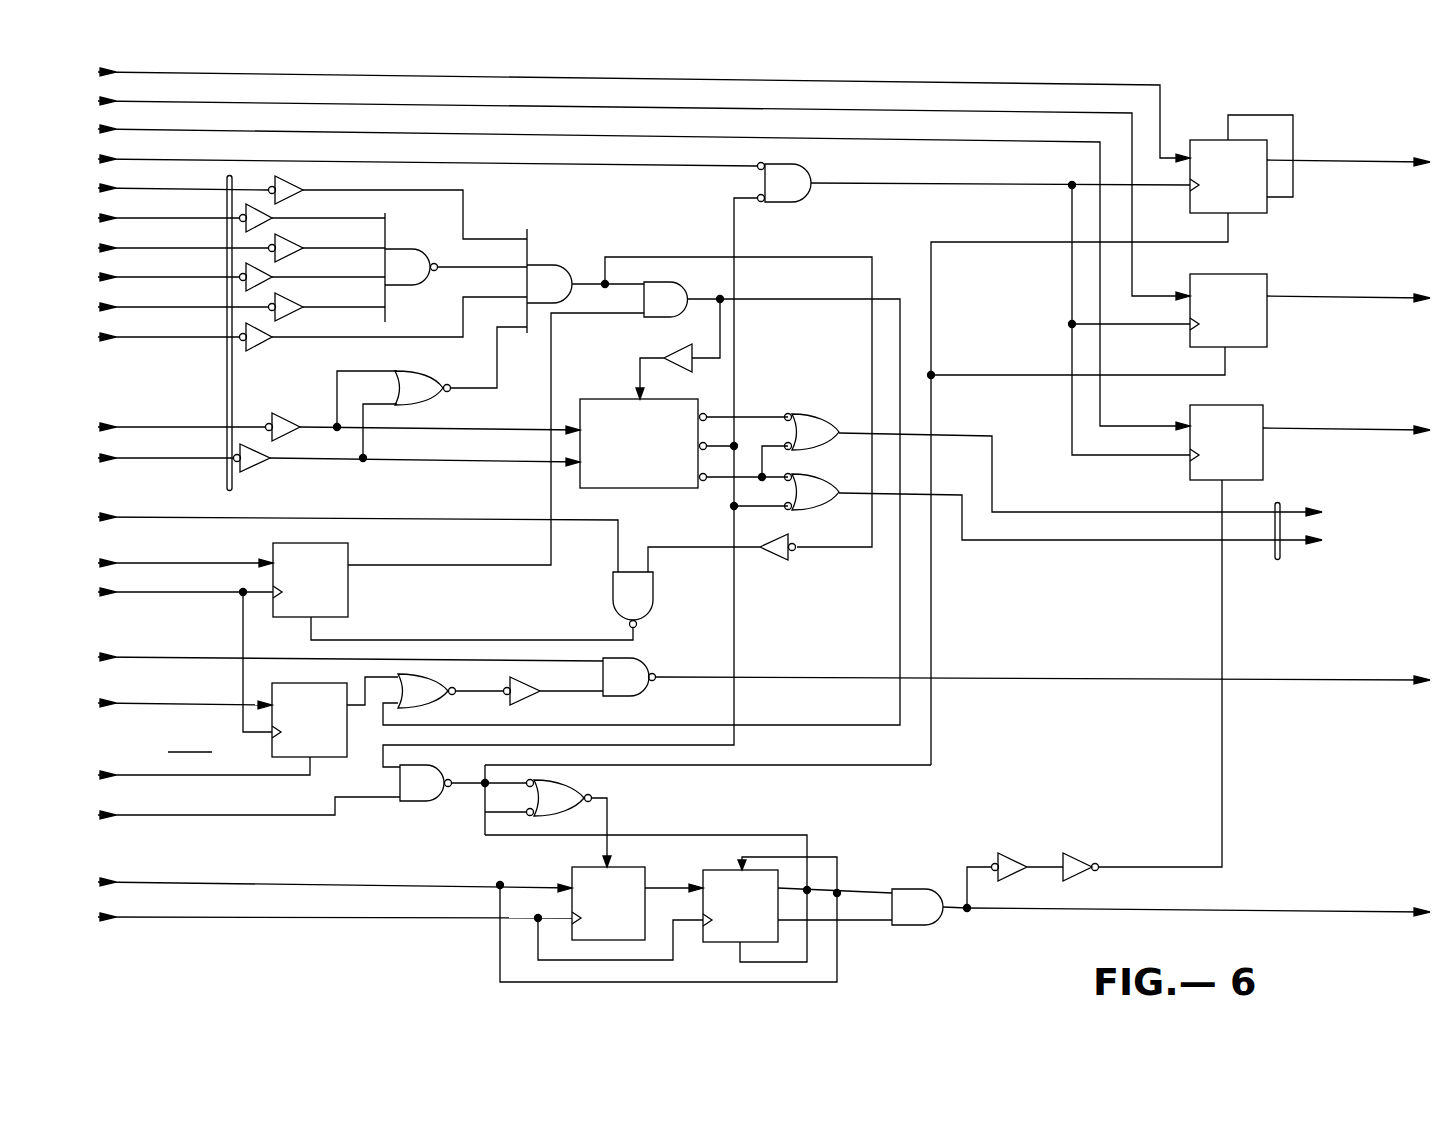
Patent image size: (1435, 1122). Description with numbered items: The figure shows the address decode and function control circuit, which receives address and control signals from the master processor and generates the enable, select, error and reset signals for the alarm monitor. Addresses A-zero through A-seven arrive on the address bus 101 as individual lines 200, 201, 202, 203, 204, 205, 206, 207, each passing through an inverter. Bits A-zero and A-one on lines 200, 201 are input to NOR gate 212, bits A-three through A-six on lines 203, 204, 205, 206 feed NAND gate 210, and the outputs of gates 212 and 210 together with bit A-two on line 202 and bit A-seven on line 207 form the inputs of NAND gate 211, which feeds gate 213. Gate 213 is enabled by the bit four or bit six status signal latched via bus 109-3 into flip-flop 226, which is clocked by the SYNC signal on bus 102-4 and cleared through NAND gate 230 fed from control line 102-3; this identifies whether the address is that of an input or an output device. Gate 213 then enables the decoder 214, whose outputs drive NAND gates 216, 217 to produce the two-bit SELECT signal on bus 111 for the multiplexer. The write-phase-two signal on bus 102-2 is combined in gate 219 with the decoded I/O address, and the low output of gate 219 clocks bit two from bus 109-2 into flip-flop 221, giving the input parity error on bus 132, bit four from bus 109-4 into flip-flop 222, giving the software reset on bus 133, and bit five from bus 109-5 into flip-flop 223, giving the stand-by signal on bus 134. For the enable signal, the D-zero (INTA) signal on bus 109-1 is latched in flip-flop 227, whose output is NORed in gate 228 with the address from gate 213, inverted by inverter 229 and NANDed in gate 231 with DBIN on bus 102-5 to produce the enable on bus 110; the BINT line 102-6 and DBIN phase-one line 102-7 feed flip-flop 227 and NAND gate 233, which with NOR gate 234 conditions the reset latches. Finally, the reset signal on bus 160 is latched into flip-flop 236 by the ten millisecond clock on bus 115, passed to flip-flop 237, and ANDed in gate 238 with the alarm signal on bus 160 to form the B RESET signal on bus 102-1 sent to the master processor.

The address bus 101 is at (232, 486).
The bit 2 bus 109-2 is at (992, 82).
The bit 4 bus 109-4 is at (858, 108).
The bit 5 bus 109-5 is at (814, 136).
The BWR·φ2 bus 102-2 is at (160, 158).
The address bit A7 bus 207 is at (137, 186).
The address bit A6 bus 206 is at (138, 216).
The address bit A5 bus 205 is at (139, 246).
The address bit A4 bus 204 is at (139, 276).
The address bit A3 bus 203 is at (136, 306).
The address bit A2 bus 202 is at (138, 336).
The NAND gate 210 is at (400, 283).
The NAND gate 211 is at (548, 268).
The gate 213 is at (712, 272).
The NOR gate 219 is at (800, 198).
The NOR gate 212 is at (440, 398).
The address bit A0 bus 200 is at (137, 420).
The address bit A1 bus 201 is at (127, 452).
The decoder 214 is at (620, 488).
The NAND gate 216 is at (808, 420).
The NAND gate 217 is at (805, 510).
The select signal bus 111 is at (1278, 558).
The flip-flop 221 is at (1245, 213).
The input parity error bus 132 is at (1412, 164).
The flip-flop 222 is at (1245, 347).
The software reset bus 133 is at (1398, 300).
The flip-flop 223 is at (1243, 480).
The stand-by bus 134 is at (1404, 432).
The control bus line 102-3 is at (144, 512).
The NAND gate 230 is at (653, 598).
The flip-flop 226 is at (348, 595).
The bit 4 or bit 6 bus 109-3 is at (97, 563).
The SYNC φ1 bus 102-4 is at (102, 594).
The DBIN bus 102-5 is at (94, 656).
The D0 (INTA) bus 109-1 is at (142, 700).
The flip-flop 227 is at (322, 757).
The NOR gate 228 is at (432, 700).
The inverter 229 is at (525, 700).
The NAND gate 231 is at (634, 693).
The enable signal bus 110 is at (1350, 700).
The BINT bus 102-6 is at (142, 758).
The DBIN·φ1 bus 102-7 is at (142, 806).
The NAND gate 233 is at (418, 800).
The NOR gate 234 is at (574, 790).
The reset signal bus 160 is at (138, 880).
The 10 ms clock bus 115 is at (118, 918).
The flip-flop 236 is at (585, 866).
The flip-flop 237 is at (722, 870).
The AND gate 238 is at (920, 925).
The B RESET bus 102-1 is at (1400, 914).